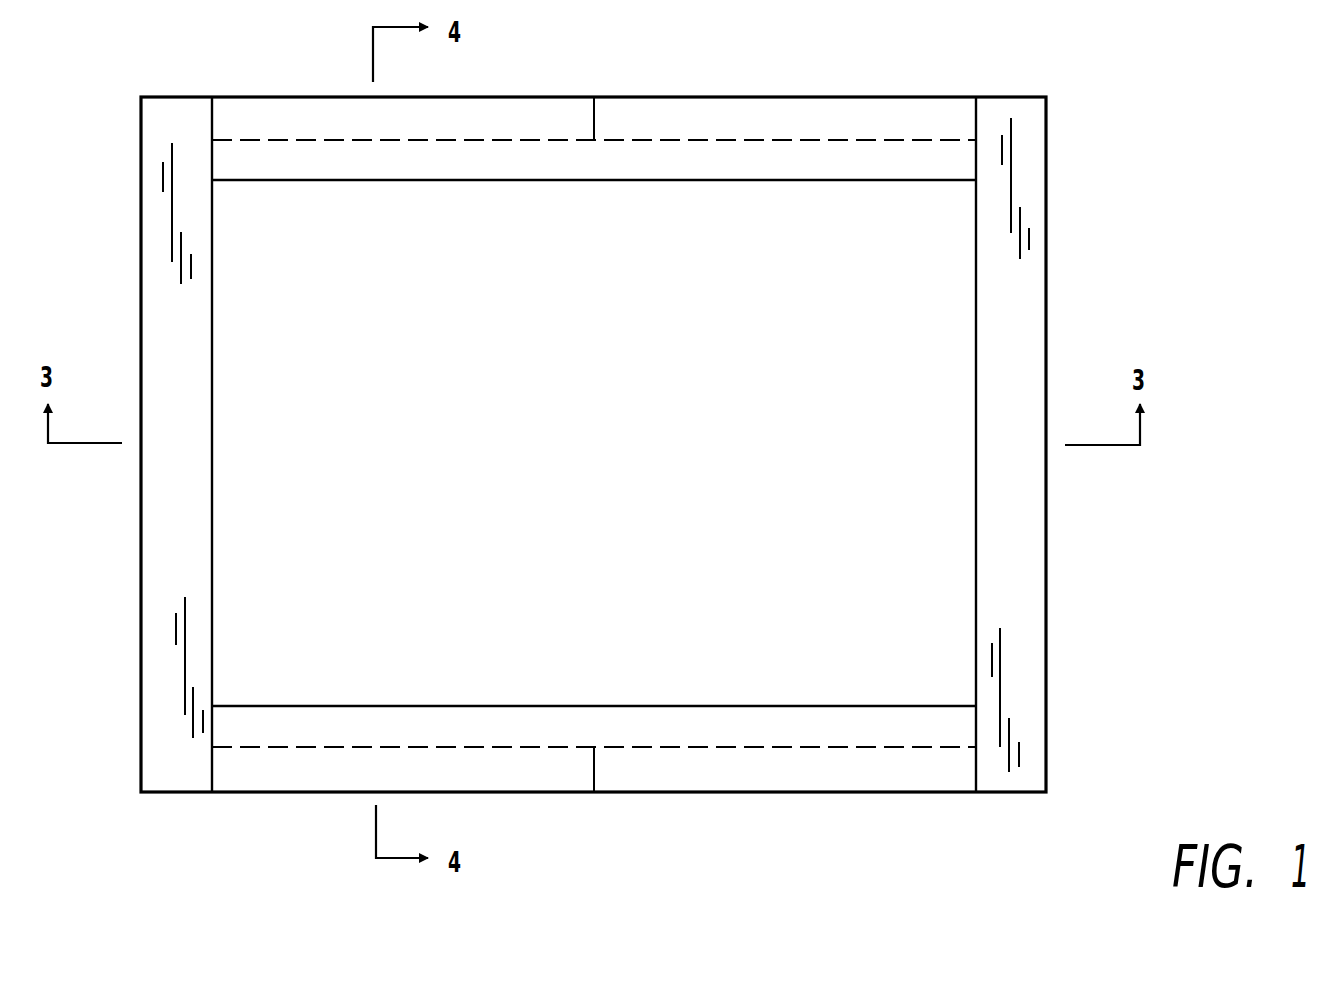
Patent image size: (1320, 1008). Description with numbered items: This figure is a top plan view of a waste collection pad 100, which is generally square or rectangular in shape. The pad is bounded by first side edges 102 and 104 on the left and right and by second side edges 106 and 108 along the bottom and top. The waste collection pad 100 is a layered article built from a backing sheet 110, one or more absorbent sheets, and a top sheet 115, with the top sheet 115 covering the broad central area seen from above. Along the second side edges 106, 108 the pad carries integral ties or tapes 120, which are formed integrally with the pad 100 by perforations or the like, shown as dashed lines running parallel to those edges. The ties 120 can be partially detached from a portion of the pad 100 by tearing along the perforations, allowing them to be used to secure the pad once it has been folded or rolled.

The waste collection pad 100 is at (1092, 93).
The first side edge 102 is at (1046, 548).
The first side edge 104 is at (140, 628).
The second side edge 106 is at (733, 793).
The second side edge 108 is at (748, 97).
The backing sheet 110 is at (172, 770).
The top sheet 115 is at (885, 268).
The integral ties or tapes 120 is at (323, 127).